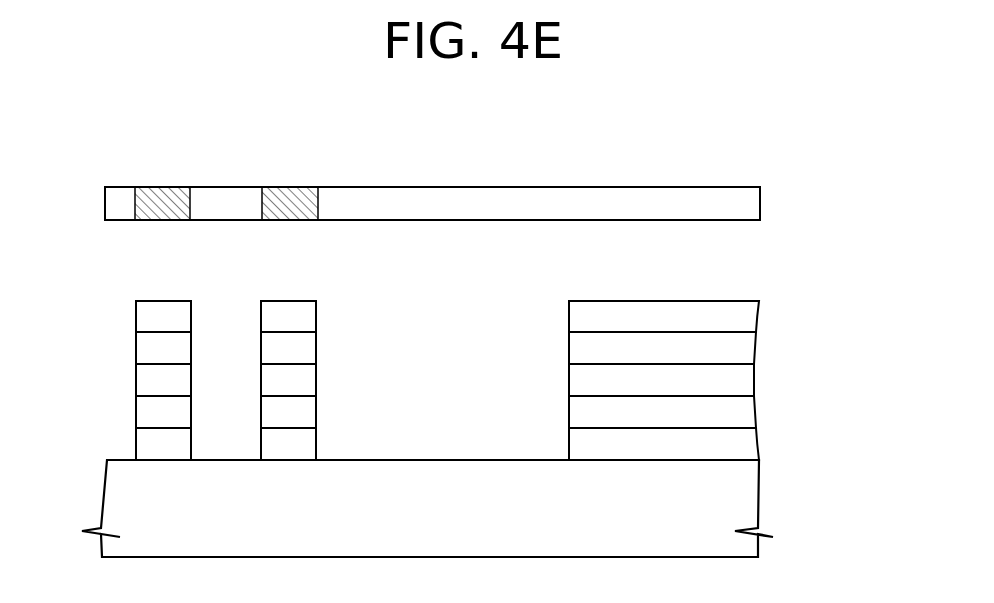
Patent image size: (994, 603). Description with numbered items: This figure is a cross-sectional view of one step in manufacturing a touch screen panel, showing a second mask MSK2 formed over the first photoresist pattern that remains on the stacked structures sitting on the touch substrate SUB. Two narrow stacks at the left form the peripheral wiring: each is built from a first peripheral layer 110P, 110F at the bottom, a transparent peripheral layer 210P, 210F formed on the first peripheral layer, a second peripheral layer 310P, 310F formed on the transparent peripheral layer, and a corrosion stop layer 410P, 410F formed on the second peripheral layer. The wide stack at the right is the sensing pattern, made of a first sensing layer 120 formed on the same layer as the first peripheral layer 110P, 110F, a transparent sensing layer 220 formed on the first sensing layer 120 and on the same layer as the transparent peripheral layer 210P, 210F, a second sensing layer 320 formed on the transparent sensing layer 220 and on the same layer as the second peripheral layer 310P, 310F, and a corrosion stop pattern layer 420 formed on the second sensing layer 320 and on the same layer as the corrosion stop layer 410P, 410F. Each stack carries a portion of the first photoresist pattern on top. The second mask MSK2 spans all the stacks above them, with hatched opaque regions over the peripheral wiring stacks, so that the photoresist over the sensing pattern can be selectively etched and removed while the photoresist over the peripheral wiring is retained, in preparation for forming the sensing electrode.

The second mask MSK2 is at (742, 206).
The corrosion stop layer 410P is at (148, 349).
The second peripheral layer 310P is at (148, 381).
The transparent peripheral layer 210P is at (148, 412).
The first peripheral layer 110P is at (148, 443).
The corrosion stop layer 410F is at (305, 350).
The second peripheral layer 310F is at (305, 382).
The transparent peripheral layer 210F is at (305, 413).
The first peripheral layer 110F is at (305, 445).
The corrosion stop pattern layer 420 is at (745, 352).
The second sensing layer 320 is at (745, 384).
The transparent sensing layer 220 is at (745, 415).
The first sensing layer 120 is at (745, 446).
The touch substrate SUB is at (745, 500).